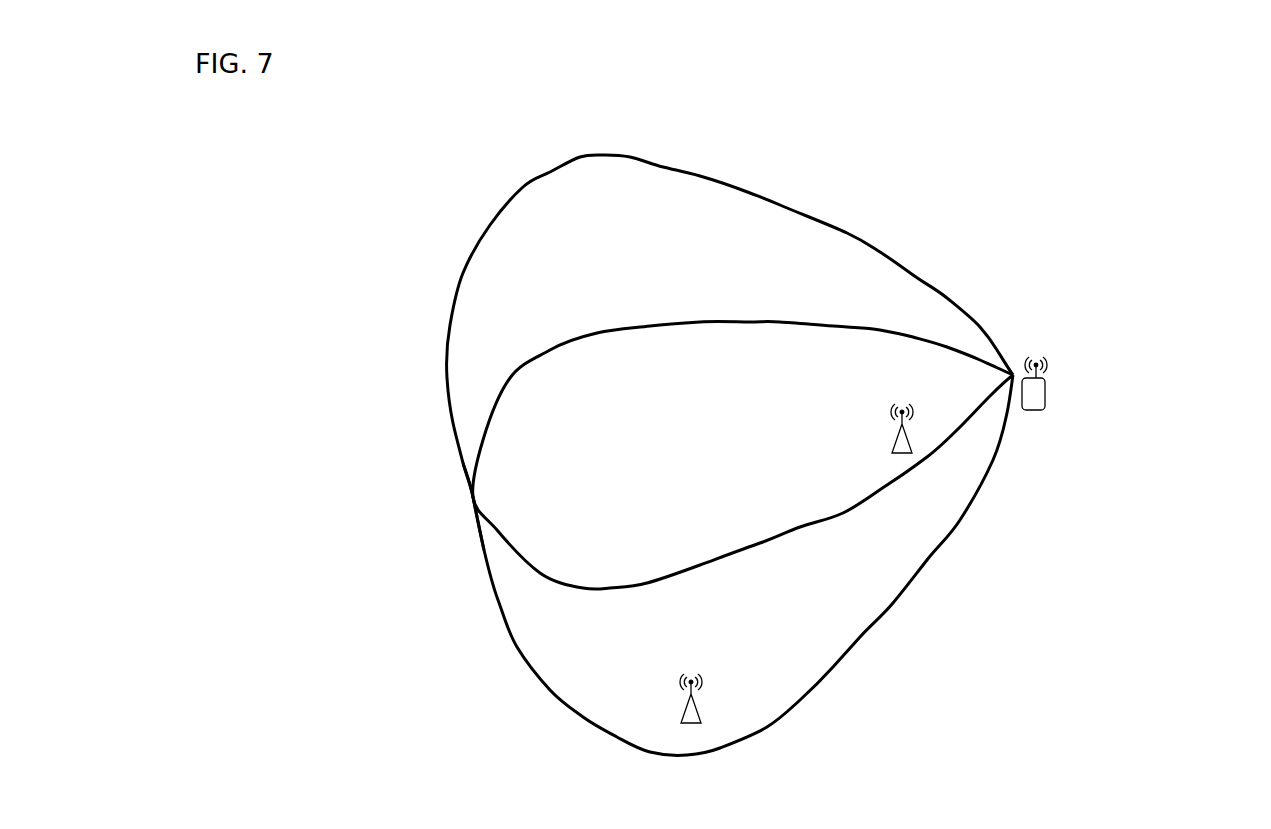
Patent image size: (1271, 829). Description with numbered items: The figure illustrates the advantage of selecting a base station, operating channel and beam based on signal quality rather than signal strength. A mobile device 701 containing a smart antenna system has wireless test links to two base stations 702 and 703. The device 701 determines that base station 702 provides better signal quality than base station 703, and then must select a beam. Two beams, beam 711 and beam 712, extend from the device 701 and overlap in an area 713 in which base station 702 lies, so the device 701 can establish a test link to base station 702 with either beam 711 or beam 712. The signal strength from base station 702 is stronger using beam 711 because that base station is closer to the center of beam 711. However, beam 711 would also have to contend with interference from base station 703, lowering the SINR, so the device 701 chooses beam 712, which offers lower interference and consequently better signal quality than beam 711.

The mobile device 701 is at (1047, 403).
The base station 702 is at (890, 442).
The base station 703 is at (682, 708).
The beam 711 is at (860, 638).
The beam 712 is at (808, 212).
The area 713 is at (517, 493).